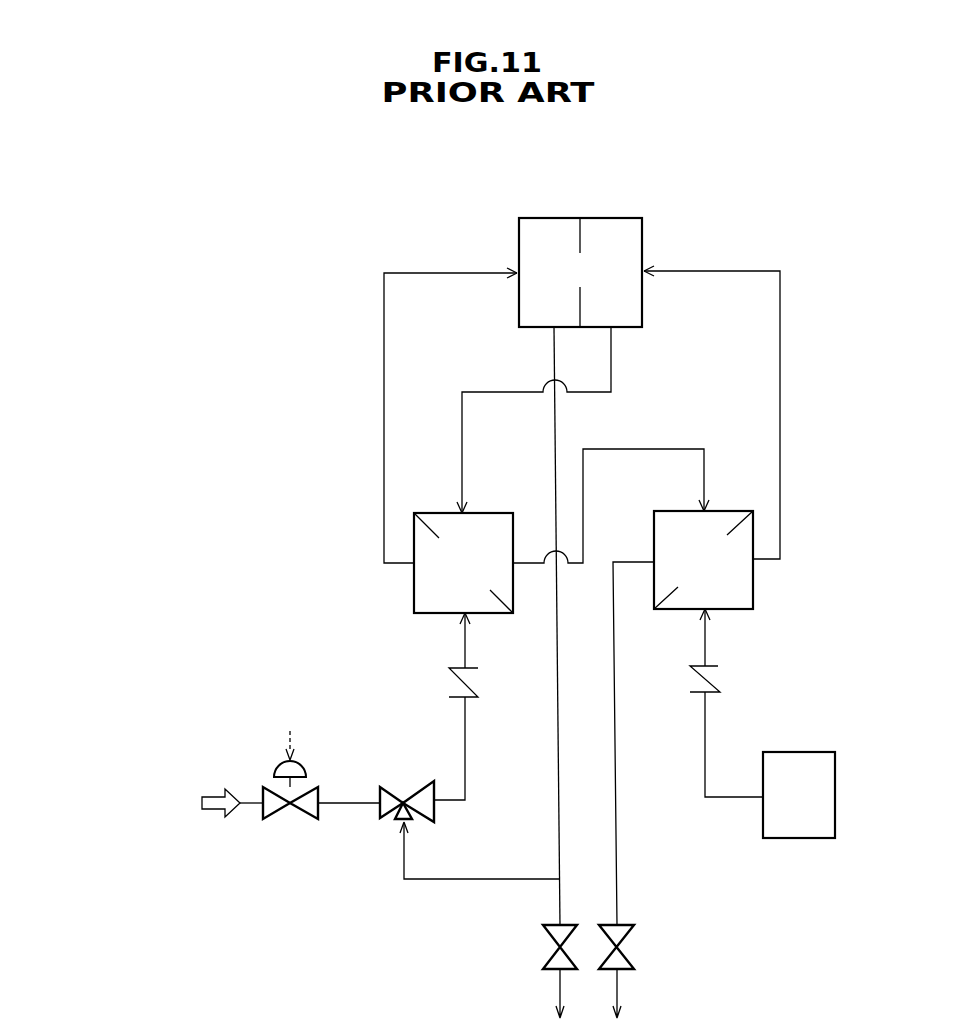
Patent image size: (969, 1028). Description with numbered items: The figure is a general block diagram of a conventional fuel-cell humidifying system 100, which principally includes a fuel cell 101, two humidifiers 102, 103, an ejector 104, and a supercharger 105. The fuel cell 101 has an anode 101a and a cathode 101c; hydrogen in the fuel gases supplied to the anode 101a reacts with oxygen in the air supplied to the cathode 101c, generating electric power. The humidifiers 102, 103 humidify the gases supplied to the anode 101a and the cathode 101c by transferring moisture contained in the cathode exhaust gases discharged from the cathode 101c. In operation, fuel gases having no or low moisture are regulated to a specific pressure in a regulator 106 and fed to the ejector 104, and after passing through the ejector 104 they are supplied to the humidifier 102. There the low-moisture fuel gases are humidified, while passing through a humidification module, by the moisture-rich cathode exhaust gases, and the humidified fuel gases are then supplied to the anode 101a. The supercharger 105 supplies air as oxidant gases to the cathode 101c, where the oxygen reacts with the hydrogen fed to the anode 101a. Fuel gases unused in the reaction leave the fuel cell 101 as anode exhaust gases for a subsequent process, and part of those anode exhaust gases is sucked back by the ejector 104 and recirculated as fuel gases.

The fuel-cell humidifying system 100 is at (322, 398).
The fuel cell 101 is at (618, 203).
The anode 101a is at (532, 237).
The cathode 101c is at (630, 235).
The humidifier 102 is at (414, 586).
The humidifier 103 is at (753, 582).
The ejector 104 is at (390, 790).
The supercharger (S/C) 105 is at (803, 752).
The regulator 106 is at (274, 769).